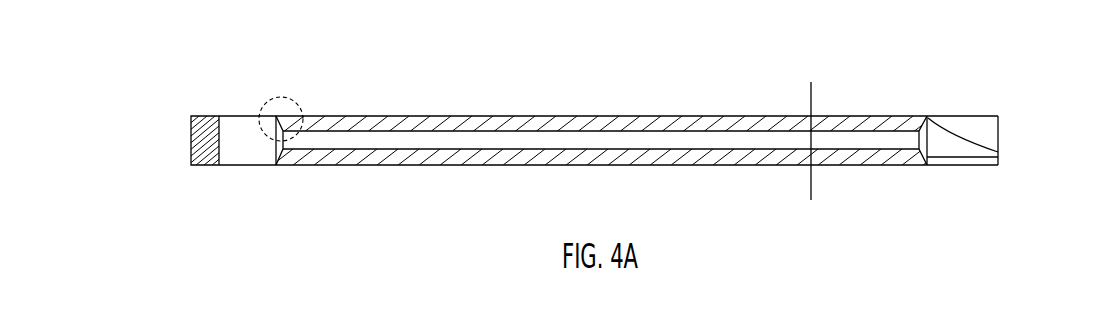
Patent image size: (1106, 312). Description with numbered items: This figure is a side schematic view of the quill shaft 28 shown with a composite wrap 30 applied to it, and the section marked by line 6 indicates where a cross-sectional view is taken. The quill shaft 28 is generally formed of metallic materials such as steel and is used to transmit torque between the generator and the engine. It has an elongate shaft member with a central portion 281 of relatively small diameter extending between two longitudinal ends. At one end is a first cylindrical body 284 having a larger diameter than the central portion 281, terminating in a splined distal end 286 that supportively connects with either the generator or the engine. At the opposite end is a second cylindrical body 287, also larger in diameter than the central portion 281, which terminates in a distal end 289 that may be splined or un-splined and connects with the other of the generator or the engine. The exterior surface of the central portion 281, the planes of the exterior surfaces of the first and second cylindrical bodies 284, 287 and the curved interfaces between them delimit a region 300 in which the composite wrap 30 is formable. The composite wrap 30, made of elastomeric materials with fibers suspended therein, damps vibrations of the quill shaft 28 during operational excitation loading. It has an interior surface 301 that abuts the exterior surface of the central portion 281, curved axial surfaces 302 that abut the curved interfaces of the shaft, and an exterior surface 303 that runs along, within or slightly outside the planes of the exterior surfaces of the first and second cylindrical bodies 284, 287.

The quill shaft 28 is at (265, 169).
The splined distal end 286 is at (199, 143).
The first cylindrical body 284 is at (243, 132).
The region 300 is at (305, 87).
The composite wrap 30 is at (559, 170).
The central portion 281 is at (400, 142).
The interior surface 301 is at (760, 149).
The exterior surface 303 is at (873, 115).
The second cylindrical body 287 is at (968, 125).
The distal end 289 is at (998, 128).
The curved axial surfaces 302 is at (998, 157).
The section line 6- 6 is at (836, 200).